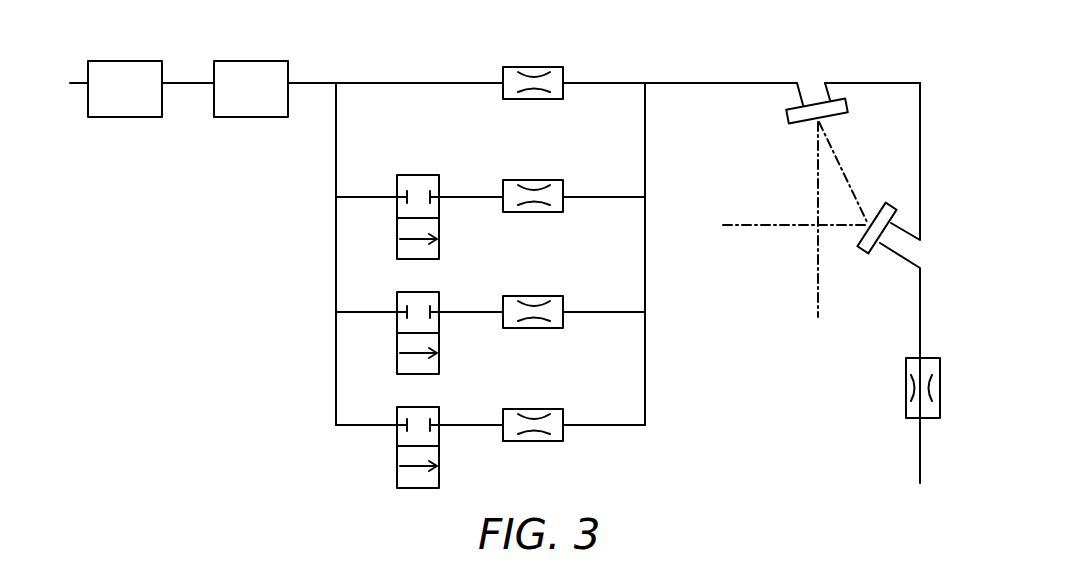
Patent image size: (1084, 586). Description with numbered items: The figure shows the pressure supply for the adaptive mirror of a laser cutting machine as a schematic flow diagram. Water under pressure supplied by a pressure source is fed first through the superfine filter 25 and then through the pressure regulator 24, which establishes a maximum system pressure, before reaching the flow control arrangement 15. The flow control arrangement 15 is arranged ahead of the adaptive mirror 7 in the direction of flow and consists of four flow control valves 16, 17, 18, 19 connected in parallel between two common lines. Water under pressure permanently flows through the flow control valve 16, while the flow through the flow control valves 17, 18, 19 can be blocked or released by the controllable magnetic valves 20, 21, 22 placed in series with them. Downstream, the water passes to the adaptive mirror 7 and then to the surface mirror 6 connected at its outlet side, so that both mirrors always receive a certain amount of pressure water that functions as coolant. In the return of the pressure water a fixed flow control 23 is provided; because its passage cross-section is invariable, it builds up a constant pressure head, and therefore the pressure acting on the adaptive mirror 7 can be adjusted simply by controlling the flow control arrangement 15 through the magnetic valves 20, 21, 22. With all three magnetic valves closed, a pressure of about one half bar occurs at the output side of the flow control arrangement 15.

The surface mirror 6 is at (863, 252).
The adaptive mirror 7 is at (813, 110).
The flow control arrangement 15 is at (318, 358).
The flow control valve 16 is at (562, 67).
The flow control valve 17 is at (556, 183).
The flow control valve 18 is at (556, 302).
The flow control valve 19 is at (558, 413).
The magnetic valve 20 is at (434, 185).
The magnetic valve 21 is at (432, 303).
The magnetic valve 22 is at (433, 412).
The fixed flow control 23 is at (912, 370).
The pressure regulator 24 is at (257, 105).
The superfine filter 25 is at (130, 105).